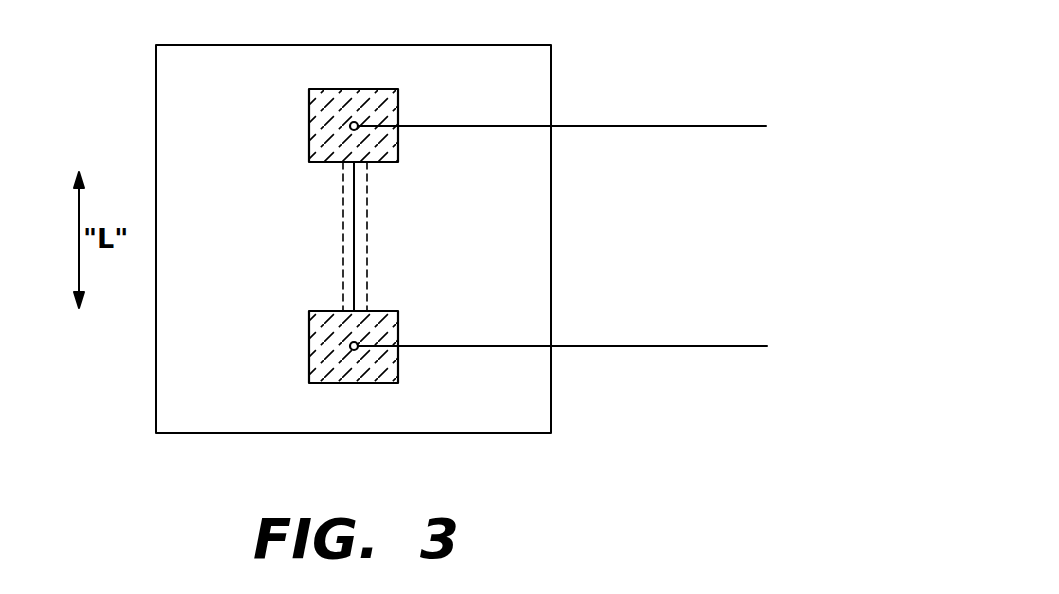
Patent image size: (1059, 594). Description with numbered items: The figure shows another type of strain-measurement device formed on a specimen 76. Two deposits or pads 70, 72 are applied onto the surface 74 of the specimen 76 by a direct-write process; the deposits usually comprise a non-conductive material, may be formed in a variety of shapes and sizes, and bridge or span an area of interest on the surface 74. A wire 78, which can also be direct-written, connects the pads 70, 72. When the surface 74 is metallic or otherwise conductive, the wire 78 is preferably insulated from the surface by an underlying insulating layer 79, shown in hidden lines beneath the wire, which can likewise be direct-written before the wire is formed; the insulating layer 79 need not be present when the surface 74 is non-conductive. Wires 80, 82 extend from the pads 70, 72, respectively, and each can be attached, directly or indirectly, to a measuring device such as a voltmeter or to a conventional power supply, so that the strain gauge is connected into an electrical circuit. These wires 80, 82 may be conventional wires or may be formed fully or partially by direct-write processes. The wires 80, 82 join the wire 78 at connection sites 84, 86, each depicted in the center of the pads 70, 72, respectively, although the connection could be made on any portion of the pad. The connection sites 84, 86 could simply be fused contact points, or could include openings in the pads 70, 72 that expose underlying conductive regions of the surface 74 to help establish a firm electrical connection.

The pad 70 is at (398, 148).
The pad 72 is at (390, 367).
The surface 74 is at (234, 107).
The specimen 76 is at (551, 388).
The wire 78 is at (354, 226).
The insulating layer 79 is at (367, 271).
The wire 80 is at (660, 126).
The wire 82 is at (661, 346).
The connection site 84 is at (358, 124).
The connection site 86 is at (358, 344).